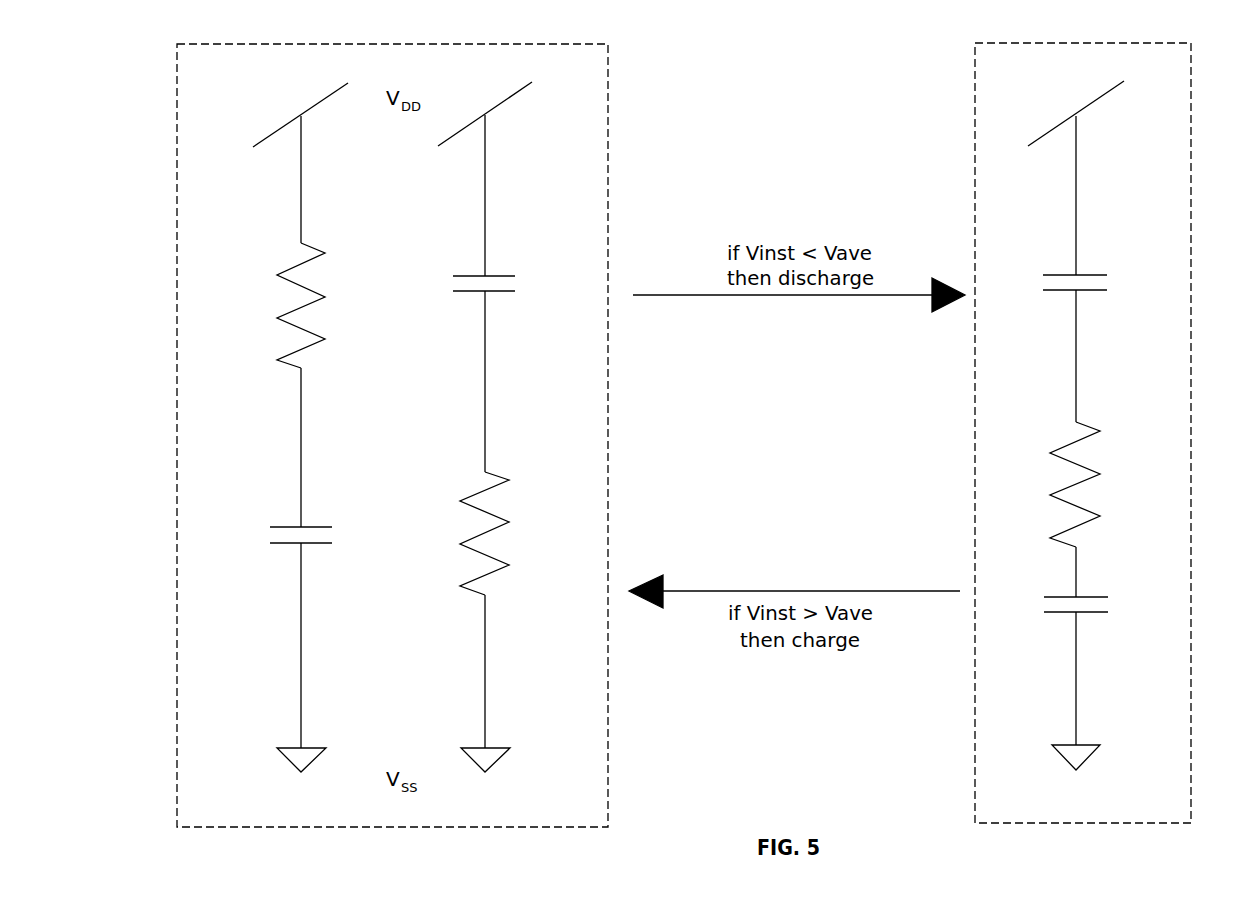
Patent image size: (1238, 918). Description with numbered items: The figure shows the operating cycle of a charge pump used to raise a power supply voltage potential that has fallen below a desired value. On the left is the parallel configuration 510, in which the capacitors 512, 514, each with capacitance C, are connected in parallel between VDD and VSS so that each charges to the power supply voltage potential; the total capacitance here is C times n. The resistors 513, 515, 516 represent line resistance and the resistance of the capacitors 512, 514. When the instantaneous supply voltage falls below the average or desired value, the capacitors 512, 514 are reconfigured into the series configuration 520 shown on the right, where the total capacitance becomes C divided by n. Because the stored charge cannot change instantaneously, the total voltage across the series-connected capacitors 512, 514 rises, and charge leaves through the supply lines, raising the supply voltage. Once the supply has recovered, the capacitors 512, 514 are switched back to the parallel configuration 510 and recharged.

The parallel configuration 510 is at (608, 81).
The series configuration 520 is at (975, 94).
The capacitor 512 is at (314, 527).
The resistor 513 is at (312, 244).
The capacitor 514 is at (497, 276).
The resistor 515 is at (497, 473).
The resistor 516 is at (1088, 425).